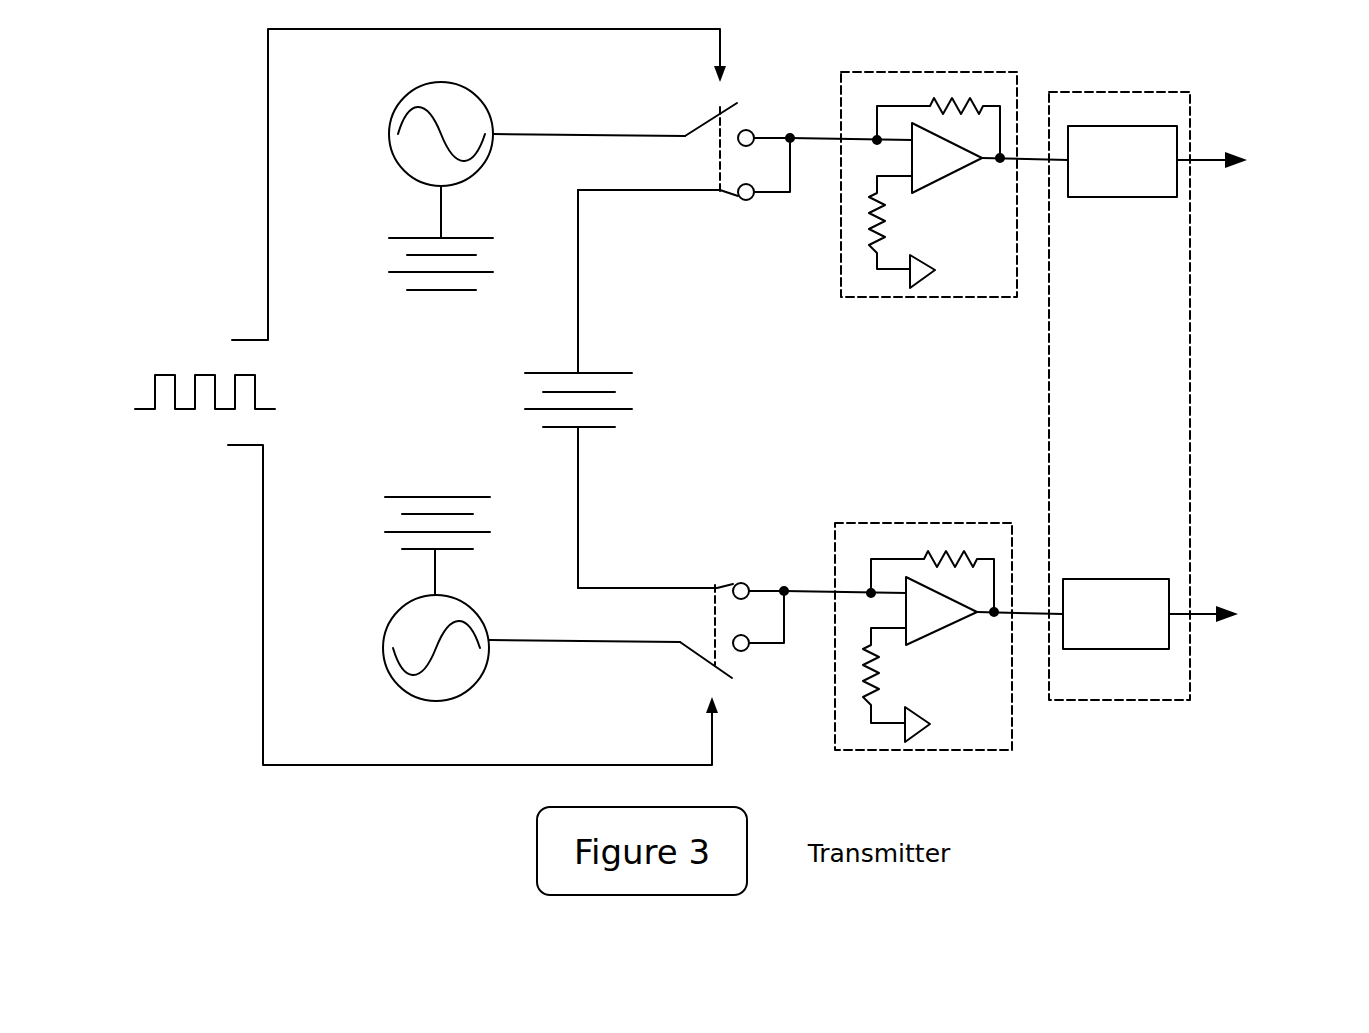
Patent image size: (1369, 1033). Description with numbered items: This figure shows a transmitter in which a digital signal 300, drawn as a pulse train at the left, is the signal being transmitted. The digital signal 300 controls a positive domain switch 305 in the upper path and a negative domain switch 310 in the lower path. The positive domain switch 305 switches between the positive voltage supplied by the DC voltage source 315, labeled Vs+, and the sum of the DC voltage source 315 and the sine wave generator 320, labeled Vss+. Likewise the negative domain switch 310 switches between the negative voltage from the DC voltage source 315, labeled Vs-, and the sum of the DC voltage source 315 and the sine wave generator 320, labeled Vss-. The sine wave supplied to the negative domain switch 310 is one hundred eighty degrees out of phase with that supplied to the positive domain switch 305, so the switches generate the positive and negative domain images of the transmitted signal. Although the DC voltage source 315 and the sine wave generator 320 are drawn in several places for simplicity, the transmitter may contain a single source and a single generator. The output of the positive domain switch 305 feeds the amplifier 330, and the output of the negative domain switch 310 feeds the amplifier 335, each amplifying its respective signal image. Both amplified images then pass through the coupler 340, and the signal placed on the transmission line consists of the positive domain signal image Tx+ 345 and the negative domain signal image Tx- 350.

The digital signal 300 is at (197, 343).
The positive domain switch 305 is at (753, 240).
The negative domain switch 310 is at (750, 551).
The DC voltage source 315 is at (438, 468).
The sine wave generator 320 is at (388, 174).
The amplifier 330 is at (998, 312).
The amplifier 335 is at (995, 510).
The coupler 340 is at (1205, 370).
The positive domain signal image Tx+ 345 is at (1283, 133).
The negative domain signal image Tx- 350 is at (1276, 575).